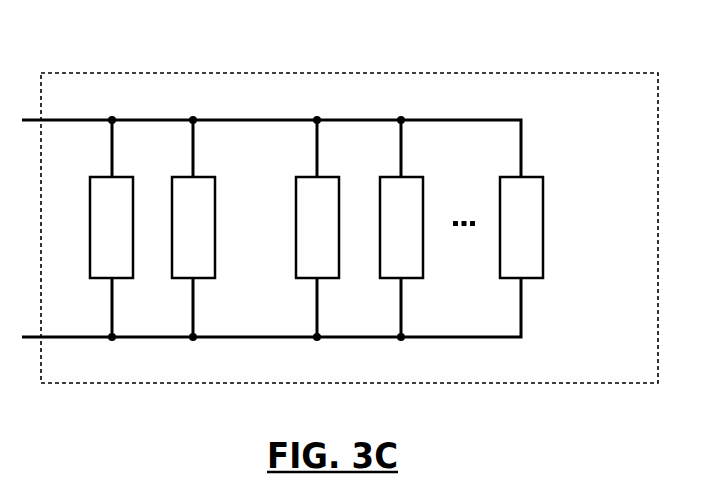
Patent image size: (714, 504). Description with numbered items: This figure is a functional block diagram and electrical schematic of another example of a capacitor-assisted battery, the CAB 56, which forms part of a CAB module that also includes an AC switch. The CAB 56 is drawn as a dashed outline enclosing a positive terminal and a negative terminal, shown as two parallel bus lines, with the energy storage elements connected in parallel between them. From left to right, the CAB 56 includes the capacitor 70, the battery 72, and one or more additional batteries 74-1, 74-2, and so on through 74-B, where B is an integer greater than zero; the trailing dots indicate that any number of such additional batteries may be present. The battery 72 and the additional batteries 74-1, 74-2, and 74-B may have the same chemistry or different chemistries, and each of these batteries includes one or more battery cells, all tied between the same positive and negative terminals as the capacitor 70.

The CAB 56 is at (112, 58).
The capacitor 70 is at (125, 177).
The battery 72 is at (216, 200).
The additional battery 74-1 is at (330, 177).
The additional battery 74-2 is at (416, 177).
The additional battery 74-B is at (537, 177).